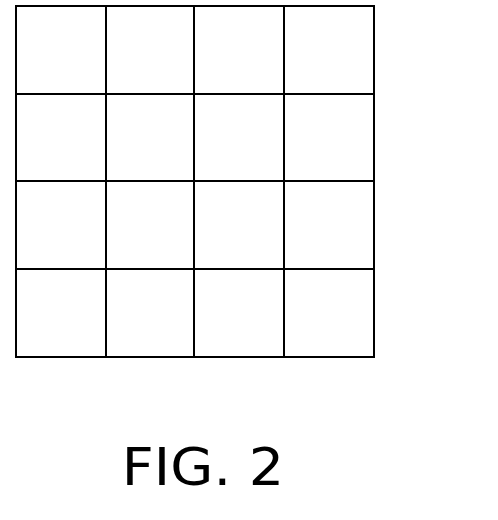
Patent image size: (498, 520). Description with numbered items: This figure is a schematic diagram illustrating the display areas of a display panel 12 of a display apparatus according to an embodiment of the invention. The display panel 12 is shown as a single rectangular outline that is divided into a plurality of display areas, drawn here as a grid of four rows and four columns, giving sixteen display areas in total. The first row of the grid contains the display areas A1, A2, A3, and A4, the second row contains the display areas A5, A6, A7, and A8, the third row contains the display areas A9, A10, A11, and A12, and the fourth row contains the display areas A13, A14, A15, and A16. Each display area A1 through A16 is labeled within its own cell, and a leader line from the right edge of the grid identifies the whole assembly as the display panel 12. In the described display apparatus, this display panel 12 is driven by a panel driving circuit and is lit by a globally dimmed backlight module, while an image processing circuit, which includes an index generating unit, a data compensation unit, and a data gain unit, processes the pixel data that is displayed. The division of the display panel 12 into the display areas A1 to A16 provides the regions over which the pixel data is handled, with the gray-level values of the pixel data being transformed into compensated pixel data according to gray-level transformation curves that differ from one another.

The display panel 12 is at (238, 181).
The display area A1 is at (61, 50).
The display area A2 is at (150, 50).
The display area A3 is at (239, 50).
The display area A4 is at (329, 50).
The display area A5 is at (61, 137).
The display area A6 is at (150, 137).
The display area A7 is at (239, 137).
The display area A8 is at (329, 137).
The display area A9 is at (61, 225).
The display area A10 is at (150, 225).
The display area A11 is at (239, 225).
The display area A12 is at (329, 225).
The display area A13 is at (61, 313).
The display area A14 is at (150, 313).
The display area A15 is at (239, 313).
The display area A16 is at (329, 313).